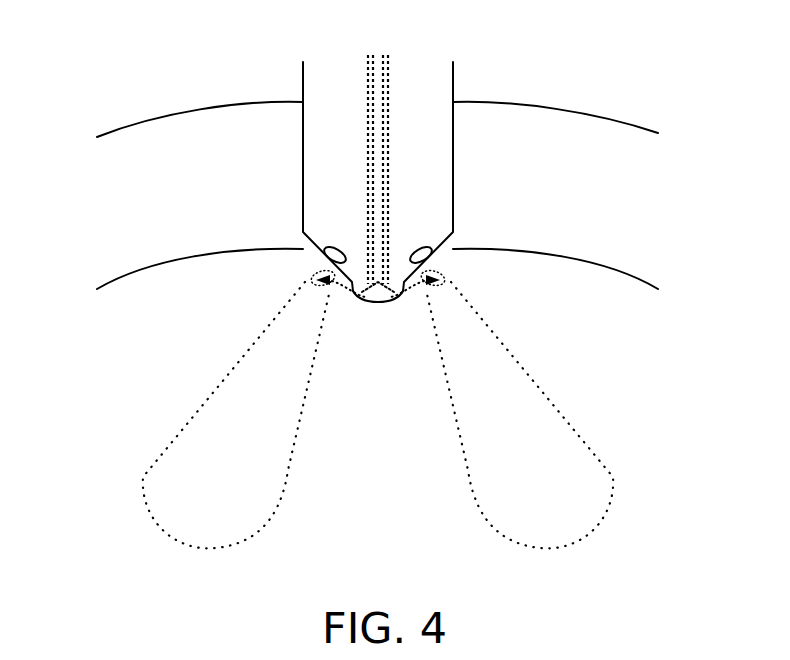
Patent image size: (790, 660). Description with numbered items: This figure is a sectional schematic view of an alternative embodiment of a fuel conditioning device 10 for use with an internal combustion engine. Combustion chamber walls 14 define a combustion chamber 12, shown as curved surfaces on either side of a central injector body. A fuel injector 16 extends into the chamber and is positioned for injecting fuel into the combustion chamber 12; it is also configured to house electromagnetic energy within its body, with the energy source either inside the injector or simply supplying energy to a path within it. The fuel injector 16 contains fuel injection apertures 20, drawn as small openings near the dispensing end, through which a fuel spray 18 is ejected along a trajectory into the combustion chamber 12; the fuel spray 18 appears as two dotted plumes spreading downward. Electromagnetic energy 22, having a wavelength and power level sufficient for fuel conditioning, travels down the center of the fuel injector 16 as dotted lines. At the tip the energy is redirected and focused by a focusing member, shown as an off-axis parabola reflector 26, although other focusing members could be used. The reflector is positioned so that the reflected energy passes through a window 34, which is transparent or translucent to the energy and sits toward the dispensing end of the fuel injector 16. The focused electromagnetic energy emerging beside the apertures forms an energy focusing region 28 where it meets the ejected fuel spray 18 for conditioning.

The fuel conditioning device 10 is at (608, 97).
The combustion chamber 12 is at (175, 343).
The combustion chamber walls 14 is at (255, 140).
The fuel injector 16 is at (440, 123).
The fuel spray 18 is at (453, 433).
The fuel injection aperture 20 is at (316, 247).
The electromagnetic energy 22 is at (387, 100).
The off-axis parabola reflector 26 is at (383, 302).
The energy focusing region 28 is at (437, 280).
The window 34 is at (375, 302).